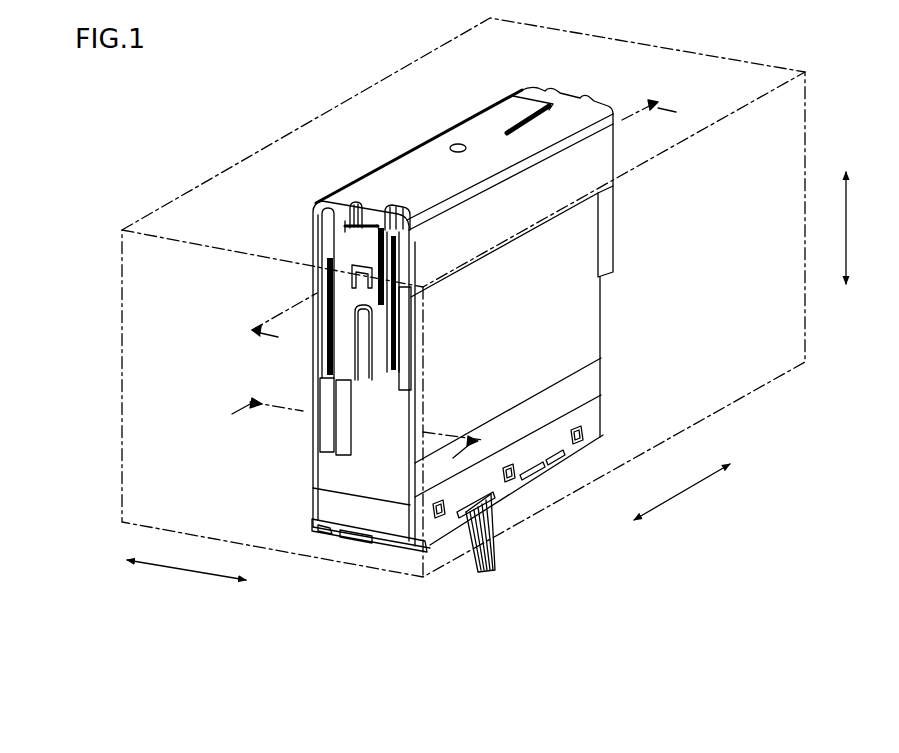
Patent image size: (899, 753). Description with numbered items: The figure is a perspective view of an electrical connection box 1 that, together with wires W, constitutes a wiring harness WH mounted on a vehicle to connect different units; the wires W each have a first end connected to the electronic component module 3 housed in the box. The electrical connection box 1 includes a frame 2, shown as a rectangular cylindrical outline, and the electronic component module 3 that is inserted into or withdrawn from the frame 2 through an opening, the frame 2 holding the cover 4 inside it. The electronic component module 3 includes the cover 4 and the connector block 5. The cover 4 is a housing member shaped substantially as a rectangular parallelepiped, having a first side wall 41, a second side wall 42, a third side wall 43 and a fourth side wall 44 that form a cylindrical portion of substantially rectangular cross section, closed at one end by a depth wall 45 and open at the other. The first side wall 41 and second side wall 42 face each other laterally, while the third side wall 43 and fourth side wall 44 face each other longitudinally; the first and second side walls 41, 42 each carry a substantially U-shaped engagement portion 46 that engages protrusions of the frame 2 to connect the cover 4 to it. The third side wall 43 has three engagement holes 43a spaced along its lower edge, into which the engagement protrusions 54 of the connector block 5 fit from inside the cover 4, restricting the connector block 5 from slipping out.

The electrical connection box 1 is at (196, 131).
The wiring harness WH is at (240, 96).
The frame 2 is at (158, 208).
The electronic component module 3 is at (328, 184).
The cover 4 is at (480, 69).
The first side wall 41 is at (367, 238).
The second side wall 42 is at (558, 92).
The third side wall 43 is at (429, 242).
The engagement holes 43a is at (494, 494).
The fourth side wall 44 is at (447, 123).
The depth wall 45 is at (430, 166).
The engagement portion 46 is at (353, 267).
The connector block 5 is at (354, 554).
The engagement protrusions 54 is at (440, 503).
The wires W is at (498, 557).